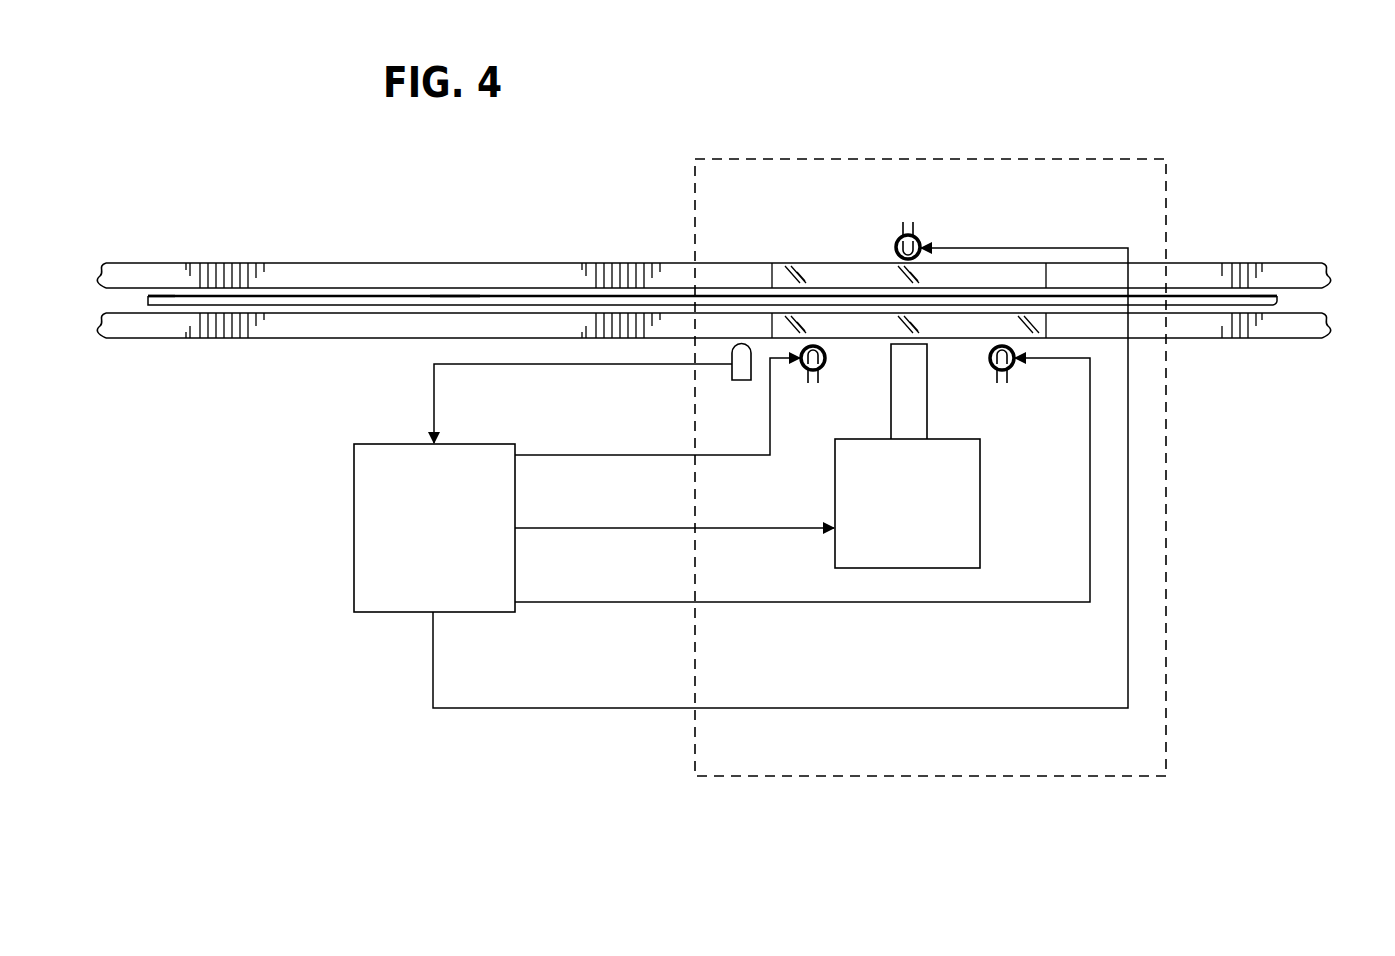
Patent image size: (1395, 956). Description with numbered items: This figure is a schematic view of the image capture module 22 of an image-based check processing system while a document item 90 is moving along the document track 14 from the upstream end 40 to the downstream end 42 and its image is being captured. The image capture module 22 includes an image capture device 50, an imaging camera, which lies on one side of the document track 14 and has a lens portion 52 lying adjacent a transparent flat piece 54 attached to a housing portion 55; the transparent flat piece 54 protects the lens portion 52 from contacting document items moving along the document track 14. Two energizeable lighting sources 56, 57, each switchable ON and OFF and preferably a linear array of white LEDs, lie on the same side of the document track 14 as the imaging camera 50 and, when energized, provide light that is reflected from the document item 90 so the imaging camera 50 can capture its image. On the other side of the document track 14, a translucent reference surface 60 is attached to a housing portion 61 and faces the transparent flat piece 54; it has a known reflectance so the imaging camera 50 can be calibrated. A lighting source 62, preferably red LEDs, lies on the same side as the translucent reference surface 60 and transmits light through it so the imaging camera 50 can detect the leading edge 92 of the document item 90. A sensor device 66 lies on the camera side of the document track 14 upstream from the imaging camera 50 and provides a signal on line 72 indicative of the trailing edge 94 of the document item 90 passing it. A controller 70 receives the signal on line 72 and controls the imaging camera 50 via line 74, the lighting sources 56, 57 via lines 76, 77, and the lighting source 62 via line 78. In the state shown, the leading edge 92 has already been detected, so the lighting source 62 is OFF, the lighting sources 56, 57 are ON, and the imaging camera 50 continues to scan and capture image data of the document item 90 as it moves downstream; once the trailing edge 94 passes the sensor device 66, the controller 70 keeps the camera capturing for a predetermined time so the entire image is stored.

The document track 14 is at (110, 299).
The image capture module 22 is at (938, 159).
The upstream end 40 is at (96, 328).
The downstream end 42 is at (1342, 333).
The image capture device 50 is at (980, 510).
The lens portion 52 is at (893, 368).
The transparent flat piece 54 is at (962, 330).
The housing portion 55 is at (322, 330).
The lighting source 56 is at (801, 370).
The lighting source 57 is at (1014, 368).
The translucent reference surface 60 is at (815, 272).
The housing portion 61 is at (320, 272).
The lighting source 62 is at (895, 244).
The sensor device 66 is at (750, 382).
The controller 70 is at (354, 468).
The line 72 is at (434, 394).
The line 74 is at (607, 528).
The line 76 is at (607, 455).
The line 77 is at (607, 602).
The line 78 is at (607, 708).
The document item 90 is at (457, 296).
The leading edge 92 is at (1277, 300).
The trailing edge 94 is at (150, 296).